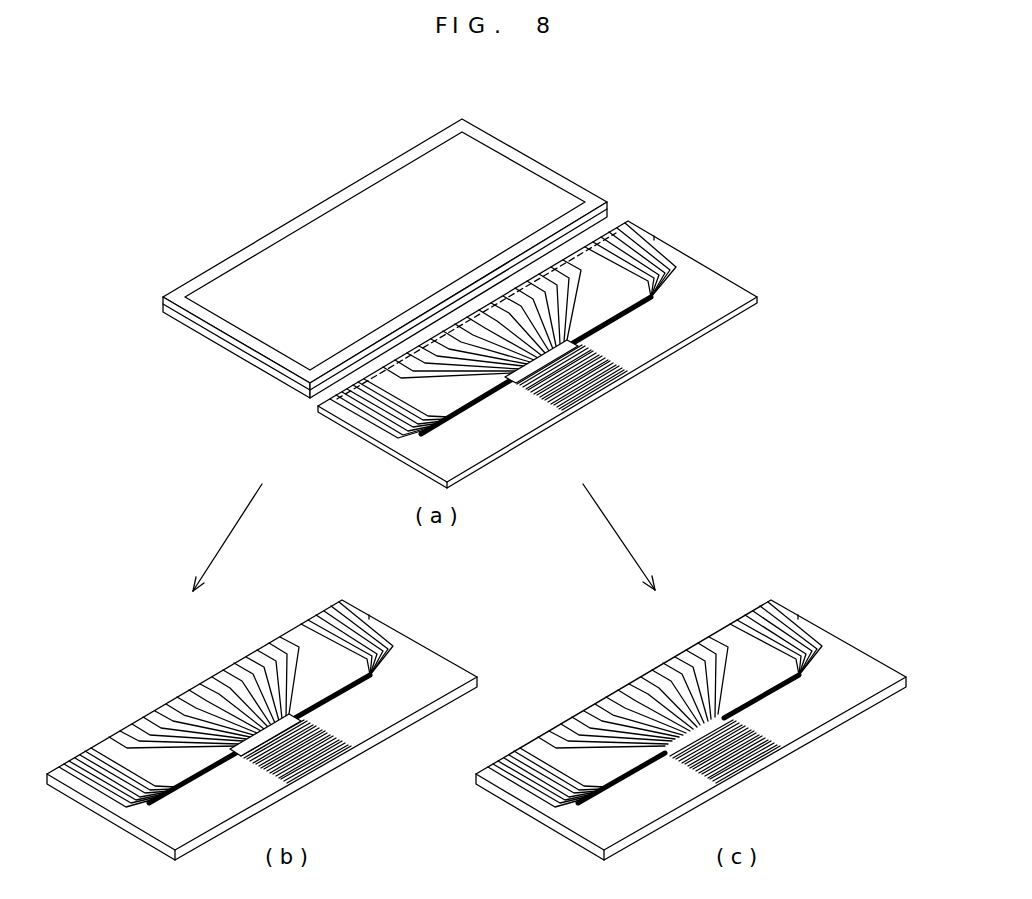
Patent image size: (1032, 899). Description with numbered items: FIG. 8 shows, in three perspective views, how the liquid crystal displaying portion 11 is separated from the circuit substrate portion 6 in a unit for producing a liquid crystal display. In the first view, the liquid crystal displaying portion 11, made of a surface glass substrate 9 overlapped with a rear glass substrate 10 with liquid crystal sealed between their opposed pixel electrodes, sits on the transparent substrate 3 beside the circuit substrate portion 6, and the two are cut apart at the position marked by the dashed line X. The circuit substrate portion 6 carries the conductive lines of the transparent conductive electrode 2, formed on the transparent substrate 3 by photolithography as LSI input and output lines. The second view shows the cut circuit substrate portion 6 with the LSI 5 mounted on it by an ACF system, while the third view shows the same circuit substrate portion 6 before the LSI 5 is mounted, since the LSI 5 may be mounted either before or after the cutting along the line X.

The transparent conductive electrode 2 is at (654, 236).
The transparent substrate 3 is at (722, 319).
The LSI 5 is at (567, 340).
The circuit substrate portion 6 is at (607, 405).
The surface glass substrate 9 is at (530, 157).
The rear glass substrate 10 is at (278, 386).
The liquid crystal displaying portion 11 is at (412, 252).
The dashed line X is at (608, 230).